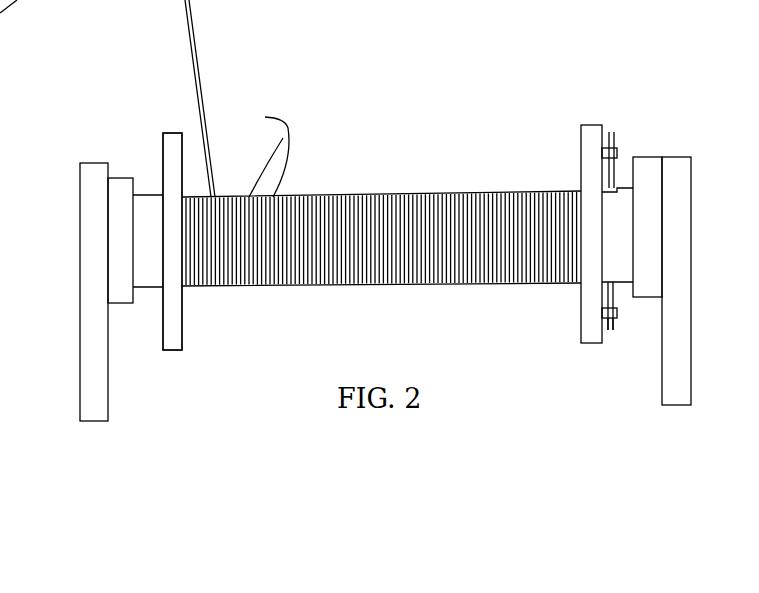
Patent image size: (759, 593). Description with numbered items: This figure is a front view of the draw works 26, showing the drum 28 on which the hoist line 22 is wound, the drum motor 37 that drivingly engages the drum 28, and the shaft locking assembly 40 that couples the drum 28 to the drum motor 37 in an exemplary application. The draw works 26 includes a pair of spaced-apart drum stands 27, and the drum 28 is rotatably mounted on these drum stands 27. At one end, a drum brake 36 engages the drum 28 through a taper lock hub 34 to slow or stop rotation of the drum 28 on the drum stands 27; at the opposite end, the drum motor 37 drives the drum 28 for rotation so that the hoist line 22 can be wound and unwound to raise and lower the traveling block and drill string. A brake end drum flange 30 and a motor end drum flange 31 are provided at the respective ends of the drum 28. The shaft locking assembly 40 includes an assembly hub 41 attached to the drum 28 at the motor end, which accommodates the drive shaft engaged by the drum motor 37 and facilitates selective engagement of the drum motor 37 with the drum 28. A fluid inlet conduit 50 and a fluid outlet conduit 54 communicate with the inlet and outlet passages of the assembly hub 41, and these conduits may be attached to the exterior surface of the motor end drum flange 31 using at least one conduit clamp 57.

The hoist line 22 is at (212, 110).
The draw works 26 is at (480, 48).
The drum stands 27 is at (87, 360).
The drum 28 is at (160, 137).
The brake end drum flange 30 is at (176, 319).
The motor end drum flange 31 is at (583, 312).
The taper lock hub 34 is at (148, 272).
The drum brake 36 is at (118, 188).
The drum motor 37 is at (648, 165).
The shaft locking assembly 40 is at (628, 98).
The assembly hub 41 is at (622, 180).
The fluid inlet conduit 50 is at (605, 168).
The fluid outlet conduit 54 is at (600, 325).
The conduit clamp 57 is at (610, 135).